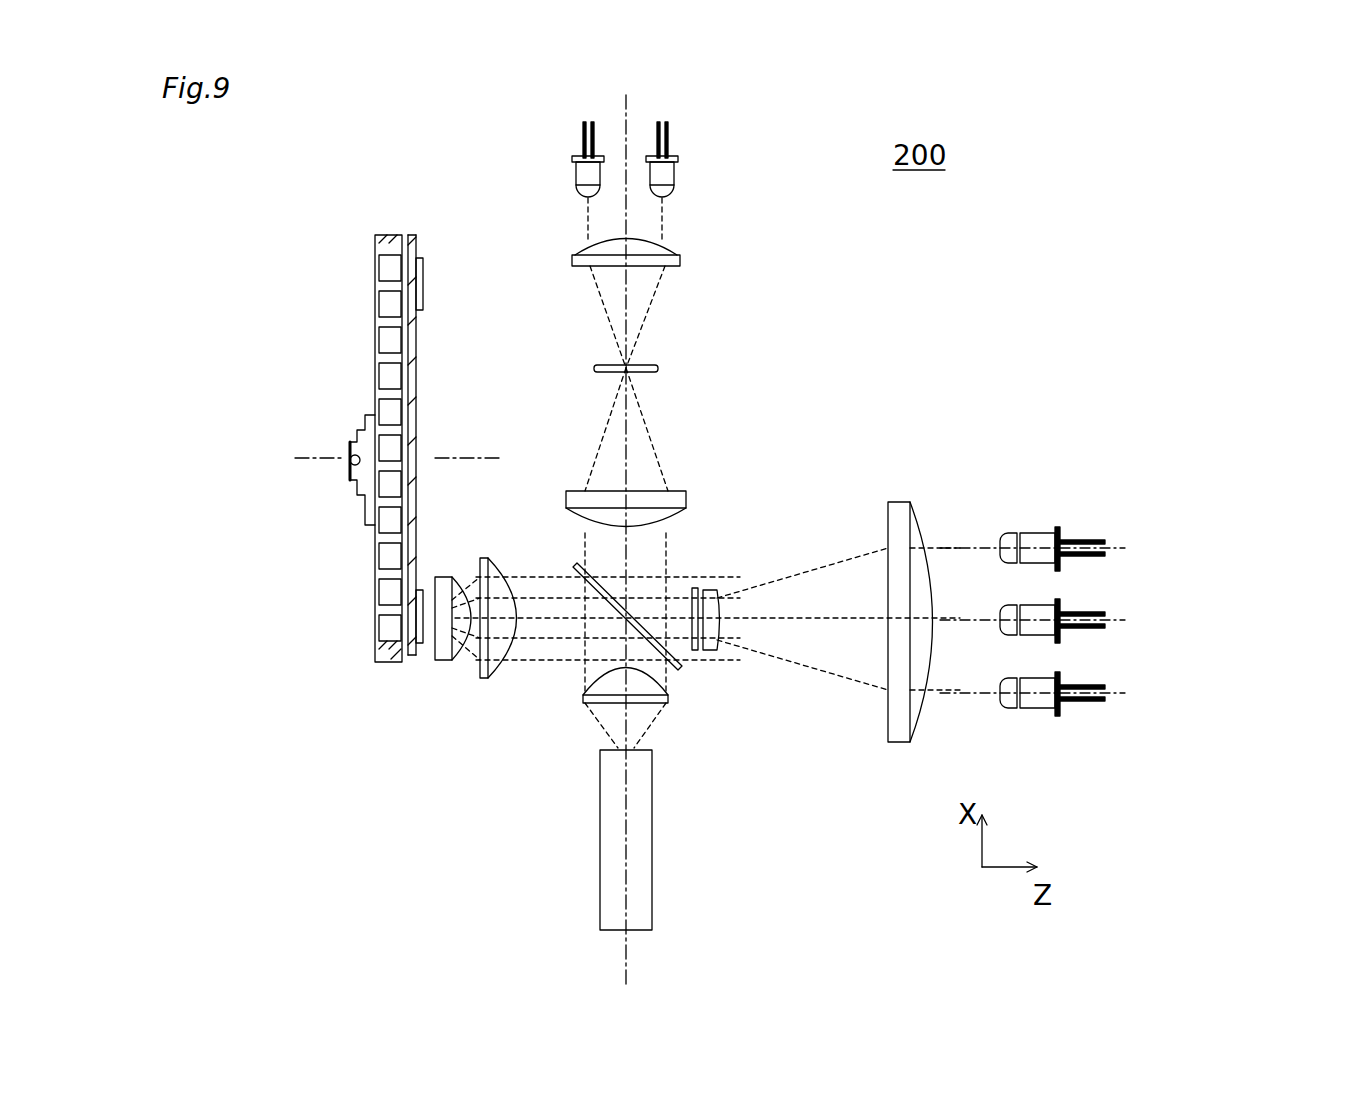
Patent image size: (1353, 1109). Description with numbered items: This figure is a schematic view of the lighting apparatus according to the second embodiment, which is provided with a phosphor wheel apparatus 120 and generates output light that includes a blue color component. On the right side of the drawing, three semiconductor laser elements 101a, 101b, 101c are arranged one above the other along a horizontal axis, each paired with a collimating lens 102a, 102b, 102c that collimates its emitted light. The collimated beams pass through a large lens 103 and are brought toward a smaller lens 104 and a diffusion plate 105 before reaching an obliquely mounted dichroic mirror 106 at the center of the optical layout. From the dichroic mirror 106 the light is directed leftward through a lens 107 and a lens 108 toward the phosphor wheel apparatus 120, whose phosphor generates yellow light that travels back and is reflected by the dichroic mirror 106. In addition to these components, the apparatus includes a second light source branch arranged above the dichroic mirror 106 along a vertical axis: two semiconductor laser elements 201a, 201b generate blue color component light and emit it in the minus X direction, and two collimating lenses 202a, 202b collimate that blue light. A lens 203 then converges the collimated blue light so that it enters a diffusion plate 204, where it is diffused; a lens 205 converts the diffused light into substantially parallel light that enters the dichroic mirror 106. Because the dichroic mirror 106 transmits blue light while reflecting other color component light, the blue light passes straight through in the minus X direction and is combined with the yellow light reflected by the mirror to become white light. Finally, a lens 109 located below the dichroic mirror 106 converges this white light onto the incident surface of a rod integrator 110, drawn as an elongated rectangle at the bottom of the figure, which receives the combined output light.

The phosphor wheel apparatus 120 is at (360, 366).
The semiconductor laser element 201a is at (578, 158).
The semiconductor laser element 201b is at (672, 158).
The collimating lens 202a is at (576, 192).
The collimating lens 202b is at (674, 190).
The lens 203 is at (682, 262).
The diffusion plate 204 is at (660, 369).
The lens 205 is at (686, 496).
The dichroic mirror 106 is at (675, 675).
The lens 109 is at (567, 700).
The rod integrator 110 is at (617, 800).
The lens 108 is at (425, 662).
The lens 107 is at (490, 680).
The diffusion plate 105 is at (695, 653).
The lens 104 is at (717, 653).
The lens 103 is at (898, 502).
The semiconductor laser element 101a is at (1062, 528).
The semiconductor laser element 101b is at (1080, 640).
The semiconductor laser element 101c is at (1062, 712).
The collimating lens 102a is at (1002, 530).
The collimating lens 102b is at (1012, 638).
The collimating lens 102c is at (1010, 710).